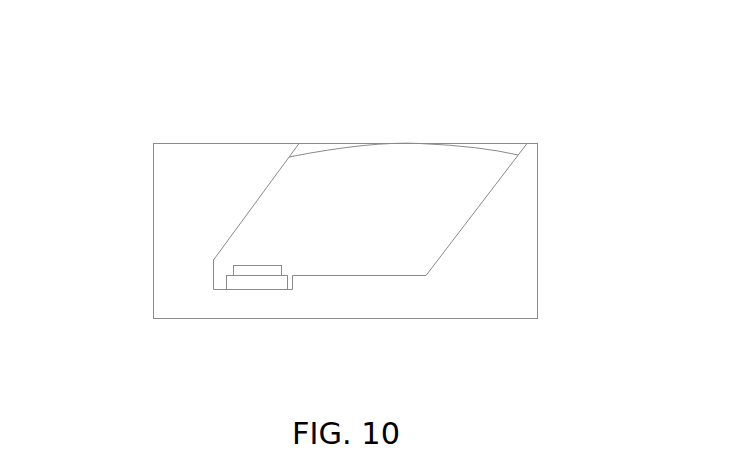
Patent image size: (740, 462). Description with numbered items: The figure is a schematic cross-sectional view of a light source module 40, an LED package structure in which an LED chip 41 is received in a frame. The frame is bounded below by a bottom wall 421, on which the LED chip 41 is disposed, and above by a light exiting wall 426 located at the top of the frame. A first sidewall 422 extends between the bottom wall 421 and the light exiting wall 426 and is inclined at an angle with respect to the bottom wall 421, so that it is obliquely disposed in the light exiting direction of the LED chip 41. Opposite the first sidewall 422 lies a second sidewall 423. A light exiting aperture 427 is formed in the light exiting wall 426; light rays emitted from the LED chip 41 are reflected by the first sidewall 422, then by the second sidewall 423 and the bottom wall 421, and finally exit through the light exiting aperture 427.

The light source module 40 is at (382, 26).
The LED chip 41 is at (261, 267).
The bottom wall 421 is at (287, 307).
The first sidewall 422 is at (167, 198).
The second sidewall 423 is at (523, 232).
The light exiting wall 426 is at (325, 143).
The light exiting aperture 427 is at (390, 143).